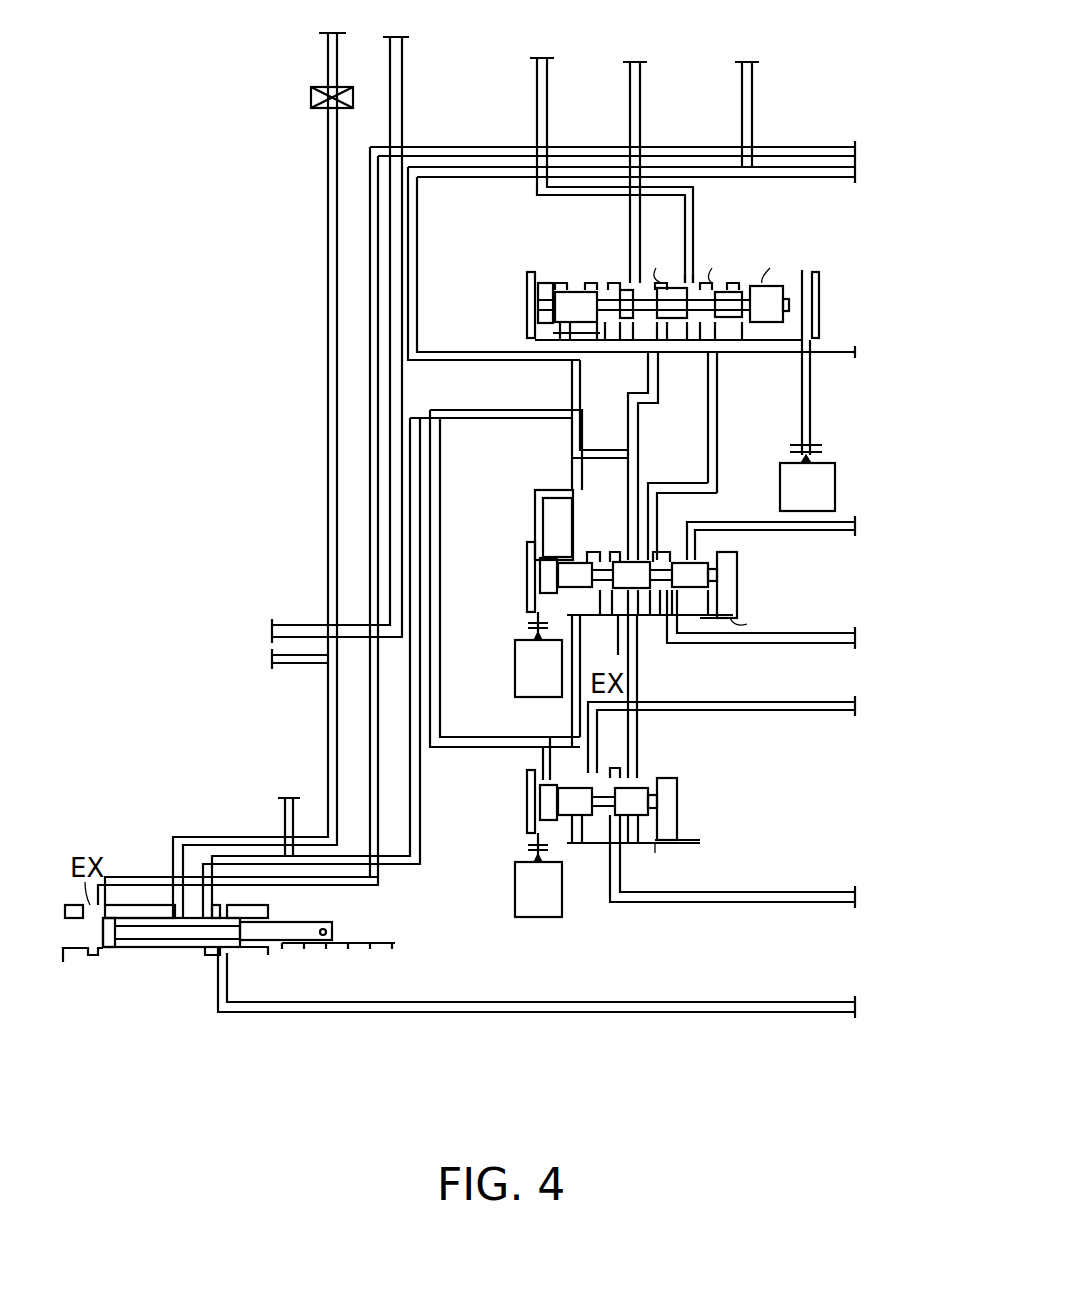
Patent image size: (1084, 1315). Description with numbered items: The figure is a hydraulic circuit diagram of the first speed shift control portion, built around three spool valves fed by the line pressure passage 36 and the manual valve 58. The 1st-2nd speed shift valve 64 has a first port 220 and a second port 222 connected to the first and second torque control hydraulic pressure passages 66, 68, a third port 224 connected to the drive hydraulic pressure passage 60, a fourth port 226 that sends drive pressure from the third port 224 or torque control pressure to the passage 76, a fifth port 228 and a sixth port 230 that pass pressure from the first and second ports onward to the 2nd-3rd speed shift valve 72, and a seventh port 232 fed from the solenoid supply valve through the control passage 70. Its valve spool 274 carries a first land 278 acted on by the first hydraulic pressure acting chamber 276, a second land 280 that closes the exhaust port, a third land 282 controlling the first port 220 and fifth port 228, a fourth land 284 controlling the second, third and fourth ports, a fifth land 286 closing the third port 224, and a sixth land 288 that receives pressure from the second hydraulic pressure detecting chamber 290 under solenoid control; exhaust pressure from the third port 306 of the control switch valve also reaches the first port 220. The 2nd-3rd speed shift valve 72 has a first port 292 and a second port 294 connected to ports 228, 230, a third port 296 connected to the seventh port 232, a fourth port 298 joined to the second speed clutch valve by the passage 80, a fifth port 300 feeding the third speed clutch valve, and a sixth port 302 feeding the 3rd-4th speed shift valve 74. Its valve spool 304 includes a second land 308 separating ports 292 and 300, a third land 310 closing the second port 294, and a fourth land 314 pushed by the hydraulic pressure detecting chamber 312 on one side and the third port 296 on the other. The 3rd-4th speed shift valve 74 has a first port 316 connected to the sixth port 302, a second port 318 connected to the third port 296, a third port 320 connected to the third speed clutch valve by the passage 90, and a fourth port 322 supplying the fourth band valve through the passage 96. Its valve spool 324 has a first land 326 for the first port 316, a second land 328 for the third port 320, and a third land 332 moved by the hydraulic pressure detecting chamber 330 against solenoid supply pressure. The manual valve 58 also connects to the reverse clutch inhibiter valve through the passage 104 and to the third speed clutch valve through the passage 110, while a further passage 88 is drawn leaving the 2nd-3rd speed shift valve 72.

The passage 36 is at (328, 410).
The manual valve 58 is at (150, 960).
The drive hydraulic pressure passage 60 is at (752, 76).
The 1st-2nd speed shift valve 64 is at (678, 278).
The first torque control hydraulic pressure passage 66 is at (547, 78).
The second torque control hydraulic pressure passage 68 is at (640, 76).
The control passage 70 is at (402, 78).
The 2nd-3rd speed shift valve 72 is at (685, 574).
The 3rd-4th speed shift valve 74 is at (622, 828).
The passage 76 is at (833, 356).
The passage 80 is at (845, 523).
The passage 88 is at (830, 645).
The passage 90 is at (830, 713).
The passage 96 is at (793, 901).
The passage 104 is at (372, 345).
The passage 110 is at (455, 1002).
The first port 220 is at (695, 280).
The second port 222 is at (620, 298).
The third port 224 is at (600, 351).
The fourth port 226 is at (622, 335).
The fifth port 228 is at (727, 358).
The sixth port 230 is at (668, 333).
The seventh port 232 is at (573, 333).
The valve spool 274 is at (800, 304).
The first hydraulic pressure acting chamber 276 is at (803, 317).
The first land 278 is at (770, 294).
The second land 280 is at (733, 296).
The third land 282 is at (665, 332).
The fourth land 284 is at (568, 291).
The fifth land 286 is at (555, 305).
The sixth land 288 is at (538, 318).
The second hydraulic pressure detecting chamber 290 is at (538, 330).
The first port 292 is at (660, 558).
The second port 294 is at (615, 555).
The third port 296 is at (563, 553).
The fourth port 298 is at (695, 558).
The fifth port 300 is at (688, 612).
The sixth port 302 is at (640, 620).
The valve spool 304 is at (706, 576).
The third port 306 is at (733, 594).
The second land 308 is at (660, 620).
The third land 310 is at (567, 587).
The hydraulic pressure detecting chamber 312 is at (537, 554).
The fourth land 314 is at (547, 570).
The first port 316 is at (628, 782).
The second port 318 is at (540, 786).
The third port 320 is at (597, 775).
The fourth port 322 is at (620, 852).
The valve spool 324 is at (660, 800).
The first land 326 is at (650, 814).
The second land 328 is at (587, 838).
The hydraulic pressure detecting chamber 330 is at (533, 830).
The third land 332 is at (548, 800).